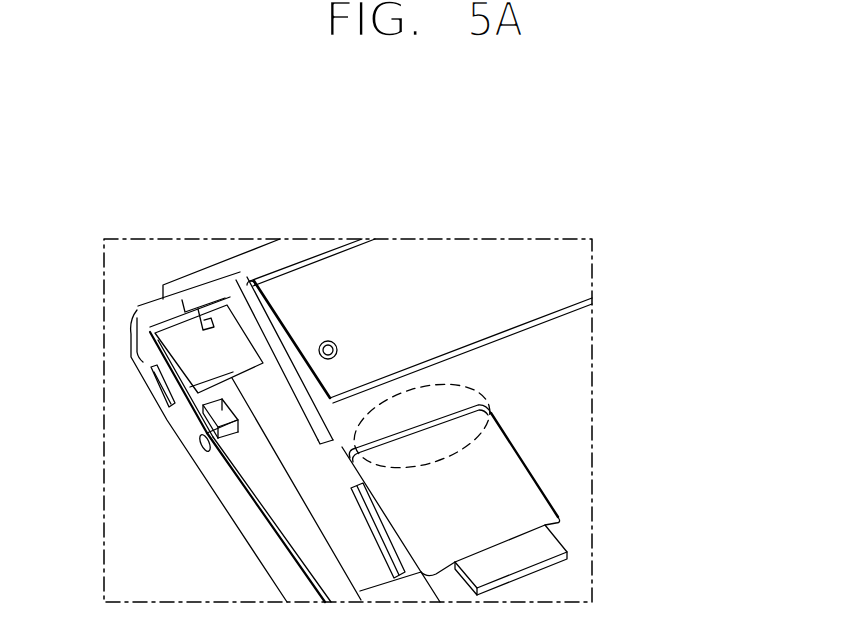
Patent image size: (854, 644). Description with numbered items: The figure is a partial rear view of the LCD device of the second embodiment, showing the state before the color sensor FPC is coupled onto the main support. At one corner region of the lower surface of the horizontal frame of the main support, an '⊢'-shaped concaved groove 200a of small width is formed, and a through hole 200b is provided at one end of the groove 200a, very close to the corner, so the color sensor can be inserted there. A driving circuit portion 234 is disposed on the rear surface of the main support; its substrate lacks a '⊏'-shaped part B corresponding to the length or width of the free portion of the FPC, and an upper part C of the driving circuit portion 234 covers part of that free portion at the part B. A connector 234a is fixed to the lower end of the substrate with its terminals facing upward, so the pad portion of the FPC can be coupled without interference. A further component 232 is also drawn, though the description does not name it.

The concaved groove 200a is at (291, 463).
The through hole 200b is at (201, 323).
The plate 232 is at (387, 285).
The driving circuit portion 234 is at (555, 404).
The connector 234a is at (535, 547).
The part B is at (500, 481).
The upper part C is at (487, 388).